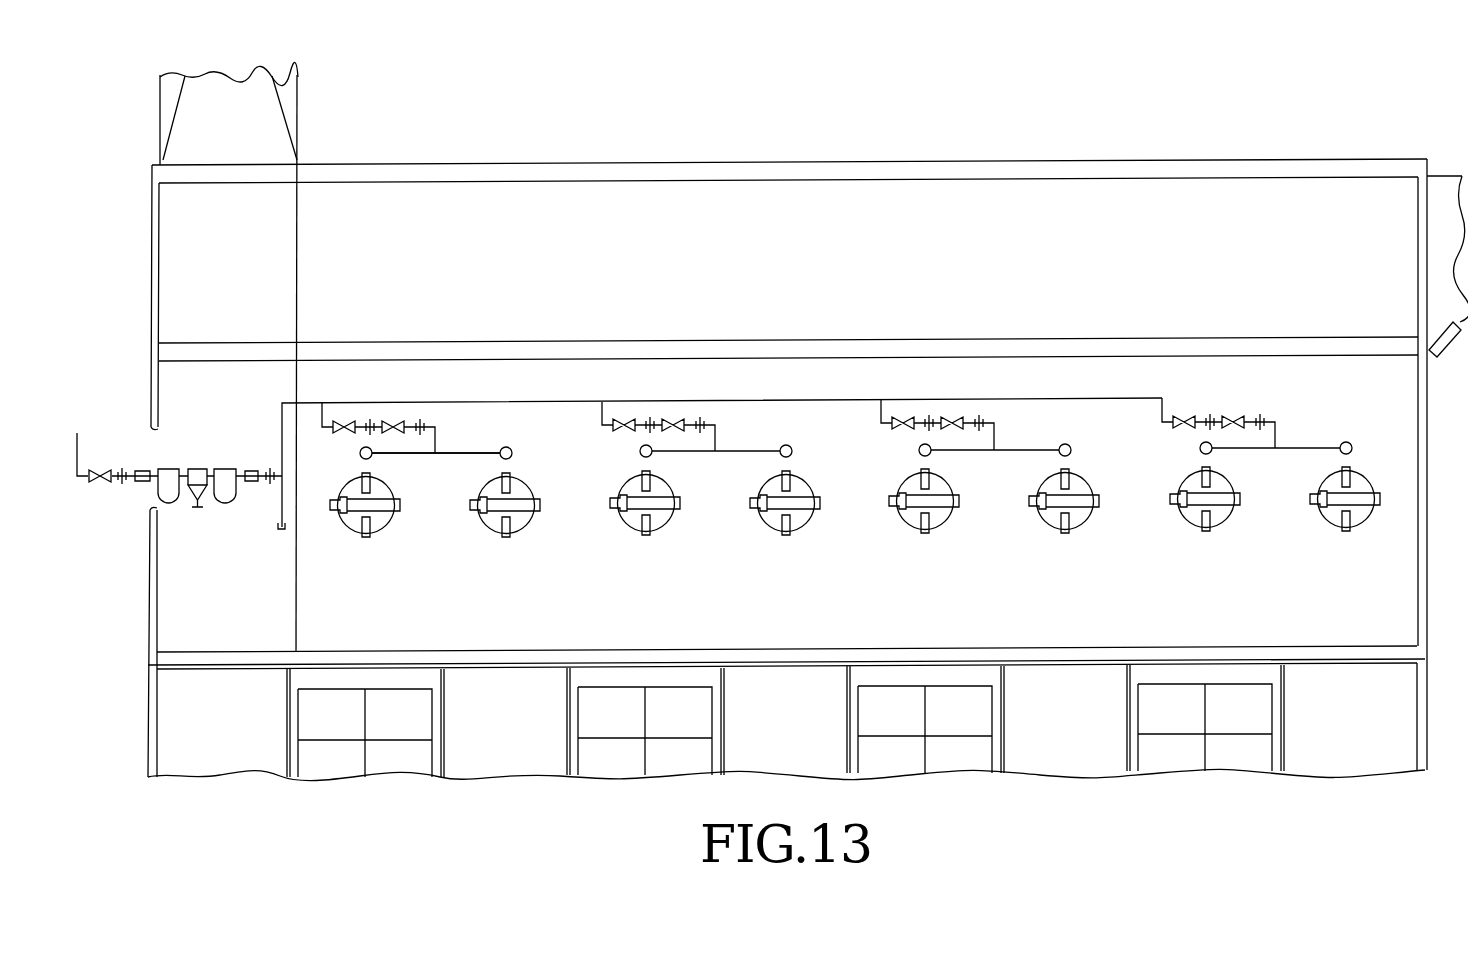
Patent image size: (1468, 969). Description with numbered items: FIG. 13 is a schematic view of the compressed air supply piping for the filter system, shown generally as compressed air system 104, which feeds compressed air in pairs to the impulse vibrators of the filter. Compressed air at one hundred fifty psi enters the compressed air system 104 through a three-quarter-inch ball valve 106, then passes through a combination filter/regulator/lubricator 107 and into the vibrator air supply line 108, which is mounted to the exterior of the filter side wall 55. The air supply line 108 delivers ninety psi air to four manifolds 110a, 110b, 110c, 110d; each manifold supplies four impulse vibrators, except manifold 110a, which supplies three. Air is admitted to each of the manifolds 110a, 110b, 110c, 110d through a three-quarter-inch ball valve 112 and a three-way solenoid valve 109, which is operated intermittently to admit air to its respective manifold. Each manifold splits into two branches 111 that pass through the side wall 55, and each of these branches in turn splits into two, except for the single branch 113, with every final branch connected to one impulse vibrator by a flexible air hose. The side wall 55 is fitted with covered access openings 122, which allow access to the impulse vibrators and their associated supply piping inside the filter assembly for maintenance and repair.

The filter side wall 55 is at (1357, 602).
The compressed air system 104 is at (117, 447).
The ball valve 106 is at (104, 481).
The combination filter/regulator/lubricator 107 is at (173, 503).
The vibrator air supply line 108 is at (280, 438).
The solenoid valve 109 is at (395, 419).
The manifold 110a is at (433, 437).
The manifold 110b is at (648, 386).
The manifold 110c is at (930, 386).
The manifold 110d is at (1208, 383).
The branches 111 is at (467, 452).
The ball valve 112 is at (344, 420).
The single branch 113 is at (369, 459).
The covered access openings 122 is at (491, 534).